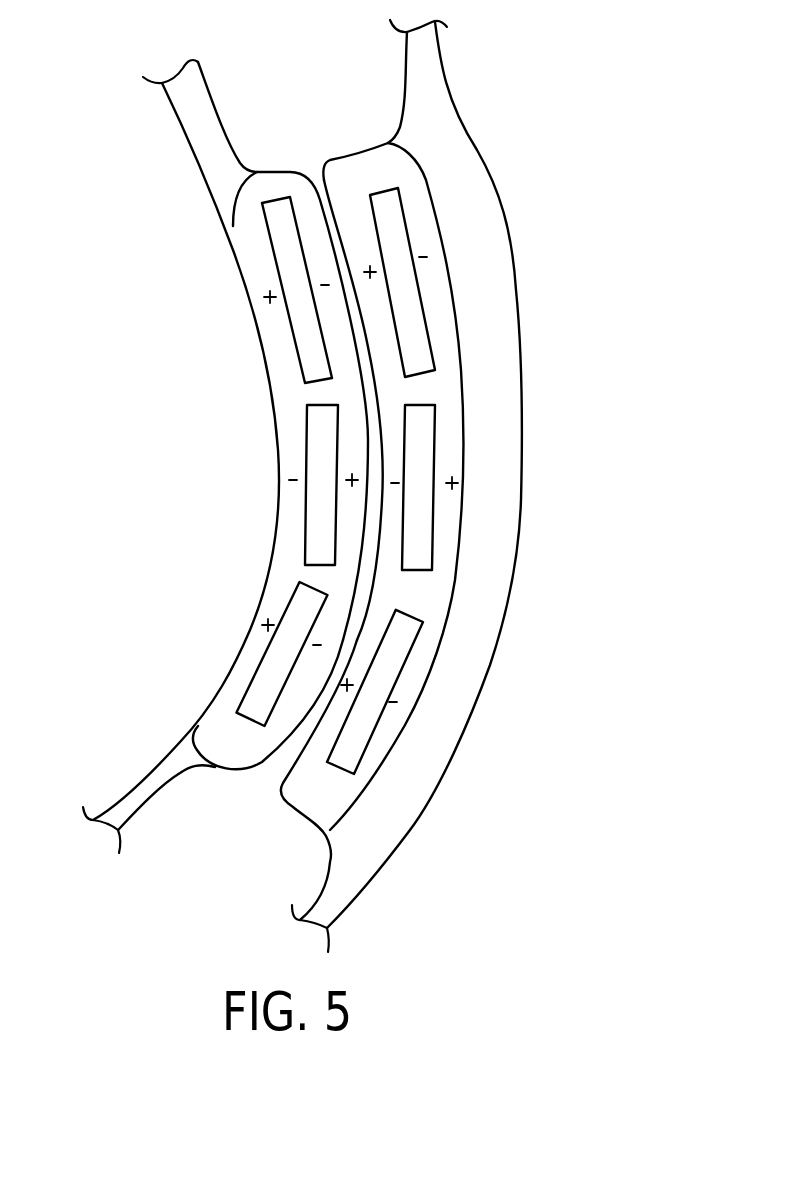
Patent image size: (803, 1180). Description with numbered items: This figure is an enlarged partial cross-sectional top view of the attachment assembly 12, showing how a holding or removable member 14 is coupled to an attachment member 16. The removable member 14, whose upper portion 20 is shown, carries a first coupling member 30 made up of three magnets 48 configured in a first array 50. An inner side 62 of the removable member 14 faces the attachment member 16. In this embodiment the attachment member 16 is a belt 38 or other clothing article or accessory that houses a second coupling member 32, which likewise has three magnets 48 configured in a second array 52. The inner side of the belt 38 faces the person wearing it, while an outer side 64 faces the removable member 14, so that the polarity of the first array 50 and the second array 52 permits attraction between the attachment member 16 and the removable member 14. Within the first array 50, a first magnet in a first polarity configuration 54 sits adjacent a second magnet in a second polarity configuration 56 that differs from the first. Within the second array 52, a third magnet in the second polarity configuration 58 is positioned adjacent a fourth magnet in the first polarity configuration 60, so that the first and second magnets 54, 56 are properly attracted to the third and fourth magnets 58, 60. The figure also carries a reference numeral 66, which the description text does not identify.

The attachment assembly 12 is at (600, 93).
The holding member 14 is at (622, 172).
The attachment member 16 is at (132, 392).
The upper portion 20 is at (330, 152).
The first coupling member 30 is at (345, 177).
The second coupling member 32 is at (270, 185).
The belt 38 is at (167, 773).
The magnets 48 is at (390, 640).
The first array 50 is at (410, 173).
The second array 52 is at (250, 213).
The first polarity configuration 54 is at (393, 670).
The second polarity configuration 56 is at (418, 518).
The third magnet in the second polarity configuration 58 is at (322, 435).
The fourth magnet in the first polarity configuration 60 is at (265, 692).
The inner side 62 is at (328, 866).
The outer side 64 is at (157, 797).
The carrier edge 66 is at (198, 715).